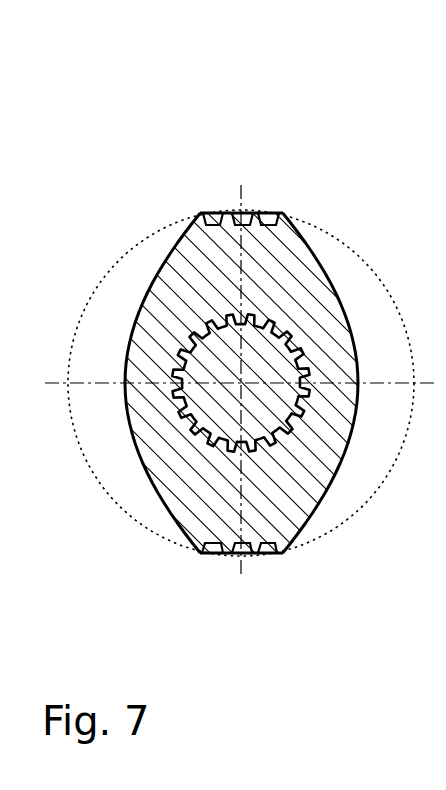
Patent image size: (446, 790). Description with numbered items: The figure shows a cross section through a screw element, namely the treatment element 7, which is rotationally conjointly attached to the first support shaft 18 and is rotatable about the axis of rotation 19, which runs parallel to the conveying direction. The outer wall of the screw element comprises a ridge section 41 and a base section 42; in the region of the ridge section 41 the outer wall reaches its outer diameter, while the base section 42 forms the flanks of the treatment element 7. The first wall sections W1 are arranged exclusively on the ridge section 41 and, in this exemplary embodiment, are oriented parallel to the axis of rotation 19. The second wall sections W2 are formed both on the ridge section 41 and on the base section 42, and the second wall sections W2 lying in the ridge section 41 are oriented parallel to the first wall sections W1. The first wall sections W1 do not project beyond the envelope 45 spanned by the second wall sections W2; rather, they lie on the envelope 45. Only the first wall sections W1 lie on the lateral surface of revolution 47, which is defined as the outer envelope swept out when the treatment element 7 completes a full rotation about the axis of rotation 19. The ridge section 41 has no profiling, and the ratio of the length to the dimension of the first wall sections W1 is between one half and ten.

The treatment element 7 is at (125, 201).
The envelope 45 is at (208, 212).
The first wall section W1 is at (263, 213).
The axis of rotation 19 is at (248, 383).
The first support shaft 18 is at (190, 414).
The ridge section 41 is at (225, 558).
The second wall section W2 is at (255, 558).
The base section 42 is at (309, 519).
The lateral surface of revolution 47 is at (368, 502).